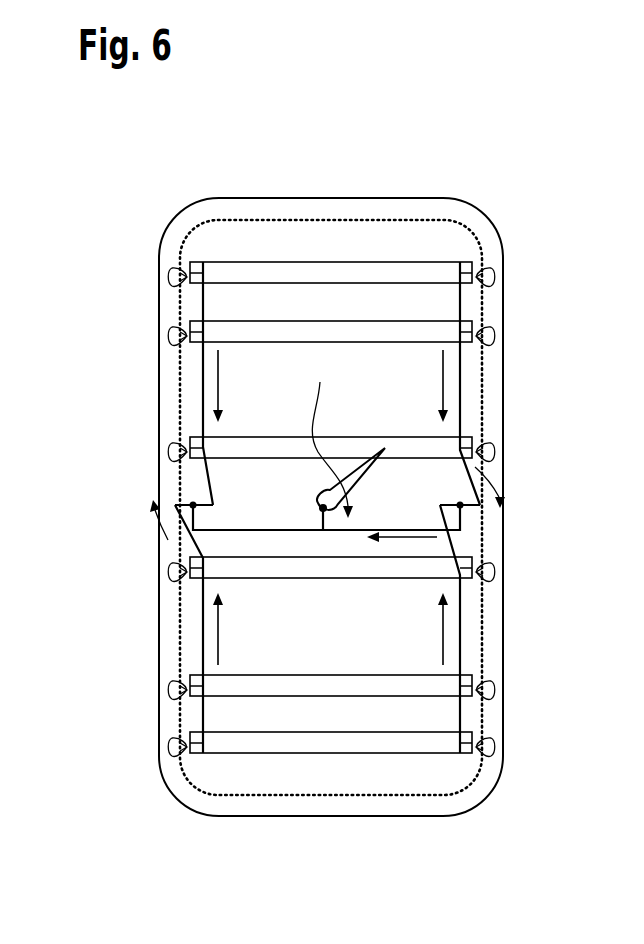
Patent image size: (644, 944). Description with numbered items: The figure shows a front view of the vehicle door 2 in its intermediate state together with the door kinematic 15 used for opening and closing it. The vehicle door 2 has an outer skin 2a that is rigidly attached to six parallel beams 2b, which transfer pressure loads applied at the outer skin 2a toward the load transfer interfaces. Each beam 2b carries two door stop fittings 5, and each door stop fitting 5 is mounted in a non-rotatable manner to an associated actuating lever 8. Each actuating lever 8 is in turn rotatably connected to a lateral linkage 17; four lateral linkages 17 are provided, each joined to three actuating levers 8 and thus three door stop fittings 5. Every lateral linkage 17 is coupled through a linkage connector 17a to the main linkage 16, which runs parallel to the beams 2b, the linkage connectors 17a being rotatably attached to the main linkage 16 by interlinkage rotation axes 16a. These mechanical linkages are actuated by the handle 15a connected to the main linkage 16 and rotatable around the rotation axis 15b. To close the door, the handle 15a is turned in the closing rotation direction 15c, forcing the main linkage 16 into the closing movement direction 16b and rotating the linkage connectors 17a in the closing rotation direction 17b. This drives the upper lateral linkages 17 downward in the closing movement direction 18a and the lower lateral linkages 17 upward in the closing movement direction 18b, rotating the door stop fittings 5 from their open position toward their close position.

The vehicle door 2 is at (465, 171).
The outer skin 2a is at (308, 199).
The beam 2b is at (380, 740).
The door stop fitting 5 is at (176, 745).
The actuating lever 8 is at (190, 777).
The door kinematic 15 is at (306, 495).
The handle 15a is at (326, 435).
The rotation axis 15b is at (318, 509).
The closing rotation direction 15c is at (358, 485).
The main linkage 16 is at (310, 531).
The interlinkage rotation axis 16a is at (176, 504).
The closing movement direction 16b is at (408, 540).
The lateral linkage 17 is at (203, 428).
The linkage connector 17a is at (215, 528).
The closing rotation direction 17b is at (168, 540).
The closing movement direction 18a is at (217, 368).
The closing movement direction 18b is at (217, 628).